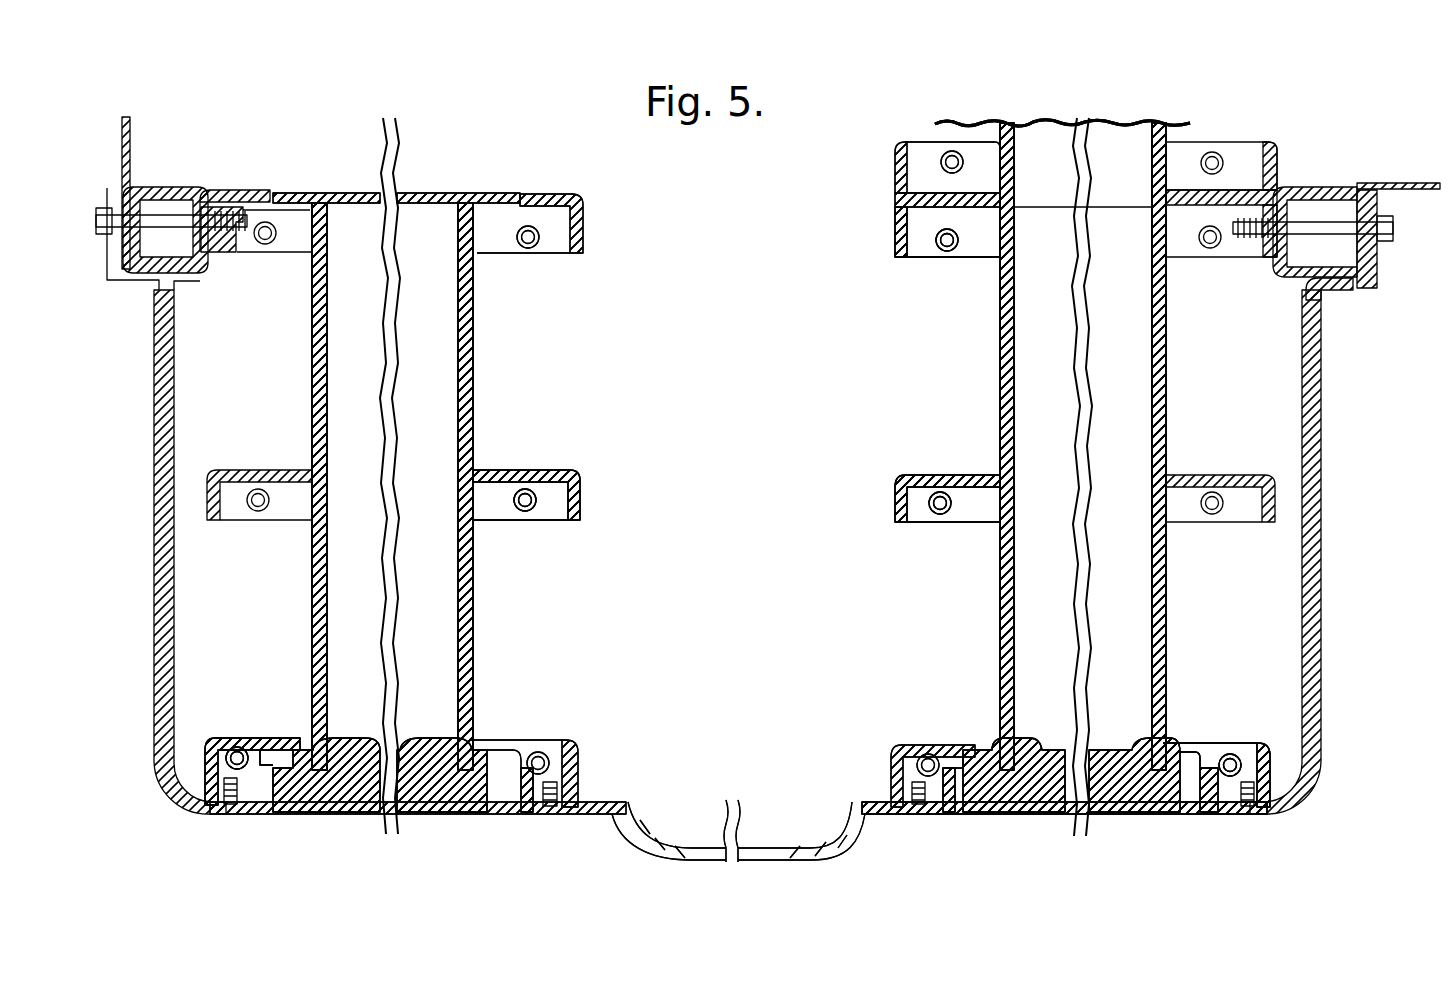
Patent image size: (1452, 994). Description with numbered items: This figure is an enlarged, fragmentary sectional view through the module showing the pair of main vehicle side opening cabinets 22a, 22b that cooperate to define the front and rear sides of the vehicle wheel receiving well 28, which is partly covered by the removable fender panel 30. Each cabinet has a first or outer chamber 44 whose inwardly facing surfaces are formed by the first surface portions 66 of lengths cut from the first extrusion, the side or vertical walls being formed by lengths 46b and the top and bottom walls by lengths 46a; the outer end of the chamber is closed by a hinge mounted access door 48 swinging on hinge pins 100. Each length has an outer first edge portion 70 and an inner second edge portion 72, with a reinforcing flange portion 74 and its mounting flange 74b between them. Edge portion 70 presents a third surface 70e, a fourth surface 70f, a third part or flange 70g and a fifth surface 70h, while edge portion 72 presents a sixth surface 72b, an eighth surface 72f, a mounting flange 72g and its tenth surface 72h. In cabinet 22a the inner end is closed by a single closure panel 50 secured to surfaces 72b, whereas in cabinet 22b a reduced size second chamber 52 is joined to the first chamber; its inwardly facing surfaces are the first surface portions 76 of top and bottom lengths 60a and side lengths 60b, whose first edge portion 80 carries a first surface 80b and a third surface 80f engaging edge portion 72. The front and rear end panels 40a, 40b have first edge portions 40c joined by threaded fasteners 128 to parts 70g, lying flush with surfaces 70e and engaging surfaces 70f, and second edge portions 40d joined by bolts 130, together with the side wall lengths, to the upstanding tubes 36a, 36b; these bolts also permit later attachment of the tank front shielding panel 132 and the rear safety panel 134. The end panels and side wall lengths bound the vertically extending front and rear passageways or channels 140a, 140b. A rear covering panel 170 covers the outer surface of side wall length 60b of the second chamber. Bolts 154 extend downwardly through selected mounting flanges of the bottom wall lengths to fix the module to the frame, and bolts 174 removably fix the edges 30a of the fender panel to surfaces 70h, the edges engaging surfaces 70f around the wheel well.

The main vehicle side opening cabinet 22a is at (335, 842).
The main vehicle side opening cabinet 22b is at (1020, 830).
The vehicle wheel receiving well 28 is at (690, 745).
The fender panel 30 is at (700, 862).
The edges of fender panel 30a is at (592, 814).
The upstanding tube 36a is at (180, 196).
The upstanding tube 36b is at (1338, 196).
The front end panel 40a is at (157, 563).
The rear end panel 40b is at (1319, 505).
The first edge portion of end panel 40c is at (196, 814).
The second edge portion of end panel 40d is at (136, 276).
The first chamber 44 is at (418, 562).
The first pair of lengths 46a is at (420, 626).
The second pair of lengths 46b is at (310, 602).
The access door 48 is at (360, 816).
The closure panel 50 is at (425, 190).
The second chamber 52 is at (1000, 136).
The first pair of lengths 60a is at (1120, 120).
The second pair of lengths 60b is at (995, 122).
The first surface portion 66 is at (365, 494).
The first edge portion 70 is at (578, 742).
The third surface 70e is at (255, 835).
The fourth surface 70f is at (545, 806).
The third part or flange 70g is at (252, 740).
The fifth surface 70h is at (888, 815).
The second edge portion 72 is at (586, 200).
The sixth surface 72b is at (278, 190).
The eighth surface 72f is at (898, 170).
The eighth part or mounting flange 72g is at (490, 258).
The tenth surface 72h is at (1300, 212).
The reinforcing flange portion 74 is at (236, 470).
The tenth part or mounting flange 74b is at (553, 522).
The first surface portion 76 is at (1052, 181).
The first edge portion 80 is at (892, 150).
The first surface 80b is at (968, 242).
The third surface 80f is at (898, 210).
The hinge pin 100 is at (298, 820).
The threaded fastener 128 is at (207, 773).
The bolt 130 is at (236, 236).
The tank front shielding panel 132 is at (130, 128).
The rear safety panel 134 is at (1420, 185).
The front passageway or channel 140a is at (268, 563).
The rear passageway or channel 140b is at (1268, 323).
The bolt 154 is at (520, 498).
The rear covering panel 170 is at (1278, 162).
The bolt 174 is at (570, 762).